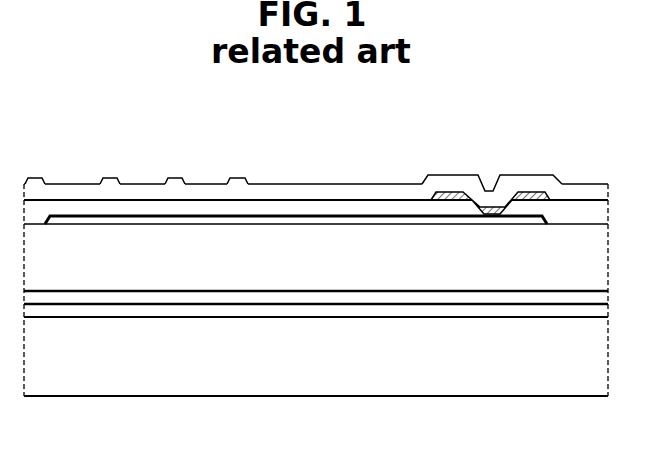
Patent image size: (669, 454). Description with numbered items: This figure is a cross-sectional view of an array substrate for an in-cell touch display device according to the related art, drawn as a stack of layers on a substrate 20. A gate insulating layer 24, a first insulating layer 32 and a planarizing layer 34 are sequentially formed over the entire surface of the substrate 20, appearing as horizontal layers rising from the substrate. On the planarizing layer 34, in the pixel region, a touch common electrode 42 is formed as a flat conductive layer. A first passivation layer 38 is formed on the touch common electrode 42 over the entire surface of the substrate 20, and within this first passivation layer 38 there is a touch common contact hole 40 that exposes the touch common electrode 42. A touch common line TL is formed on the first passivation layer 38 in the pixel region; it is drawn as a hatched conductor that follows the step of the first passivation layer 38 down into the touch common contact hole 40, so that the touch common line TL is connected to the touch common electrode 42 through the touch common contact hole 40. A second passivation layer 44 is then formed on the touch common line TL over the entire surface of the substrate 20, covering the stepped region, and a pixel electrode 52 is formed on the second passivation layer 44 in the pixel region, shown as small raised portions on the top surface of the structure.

The substrate 20 is at (563, 386).
The gate insulating layer 24 is at (515, 312).
The first insulating layer 32 is at (455, 297).
The planarizing layer 34 is at (402, 285).
The first passivation layer 38 is at (143, 208).
The touch common electrode 42 is at (200, 220).
The second passivation layer 44 is at (90, 192).
The touch common contact hole 40 is at (478, 158).
The pixel electrode 52 is at (233, 178).
The touch common line TL is at (522, 190).